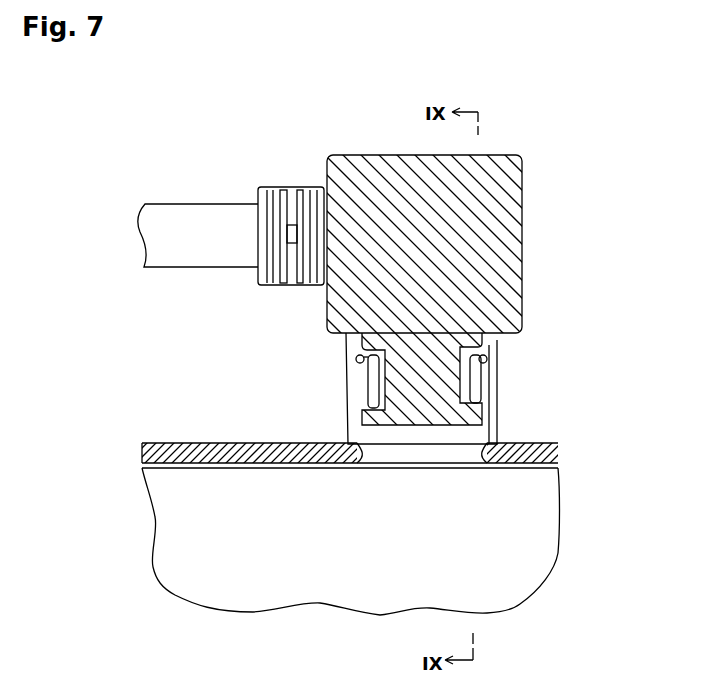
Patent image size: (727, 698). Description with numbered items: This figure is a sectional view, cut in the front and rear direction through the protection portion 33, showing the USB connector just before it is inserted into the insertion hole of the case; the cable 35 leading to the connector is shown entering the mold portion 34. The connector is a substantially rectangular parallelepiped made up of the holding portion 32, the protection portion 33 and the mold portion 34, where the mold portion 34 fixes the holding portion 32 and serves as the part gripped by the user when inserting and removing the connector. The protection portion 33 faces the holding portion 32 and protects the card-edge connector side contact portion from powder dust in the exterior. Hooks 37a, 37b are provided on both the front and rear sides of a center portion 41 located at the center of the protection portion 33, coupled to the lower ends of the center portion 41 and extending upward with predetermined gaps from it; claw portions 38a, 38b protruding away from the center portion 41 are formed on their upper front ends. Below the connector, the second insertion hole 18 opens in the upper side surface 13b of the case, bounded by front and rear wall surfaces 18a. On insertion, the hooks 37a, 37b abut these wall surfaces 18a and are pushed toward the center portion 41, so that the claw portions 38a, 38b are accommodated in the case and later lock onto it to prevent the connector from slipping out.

The upper side surface 13b is at (177, 445).
The second insertion hole 18 is at (430, 463).
The wall surfaces 18a is at (360, 449).
The holding portion 32 is at (499, 425).
The protection portion 33 is at (478, 390).
The mold portion 34 is at (524, 237).
The cable 35 is at (203, 232).
The hook 37a is at (372, 390).
The hook 37b is at (470, 400).
The claw portion 38a is at (355, 359).
The claw portion 38b is at (489, 358).
The center portion 41 is at (420, 380).